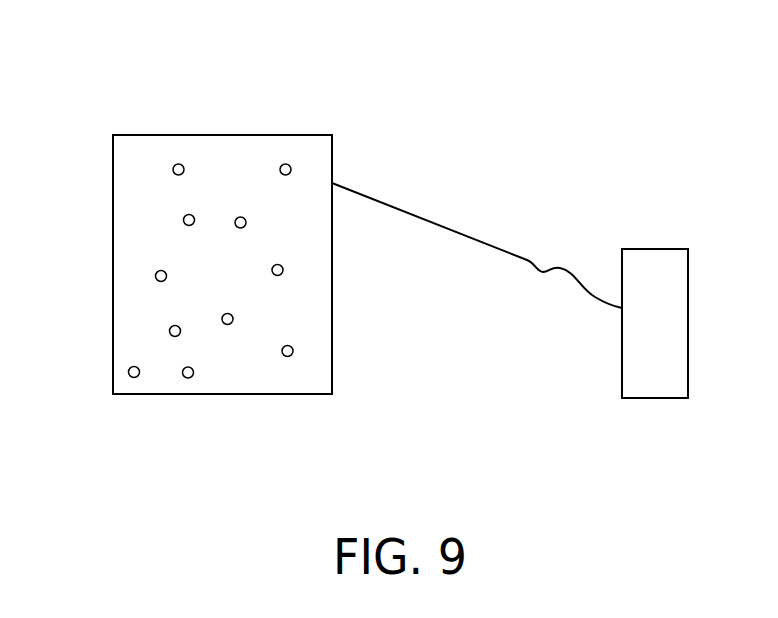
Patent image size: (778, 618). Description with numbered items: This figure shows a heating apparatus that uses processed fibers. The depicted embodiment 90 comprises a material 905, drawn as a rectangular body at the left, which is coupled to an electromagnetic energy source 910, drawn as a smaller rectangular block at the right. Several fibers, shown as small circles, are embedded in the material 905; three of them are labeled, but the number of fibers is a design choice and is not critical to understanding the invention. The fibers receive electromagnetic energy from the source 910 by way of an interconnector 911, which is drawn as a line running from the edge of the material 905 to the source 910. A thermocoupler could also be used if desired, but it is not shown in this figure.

The embodiment 90 is at (528, 98).
The material 905 is at (74, 168).
The electromagnetic energy source 910 is at (665, 430).
The interconnector 911 is at (435, 225).